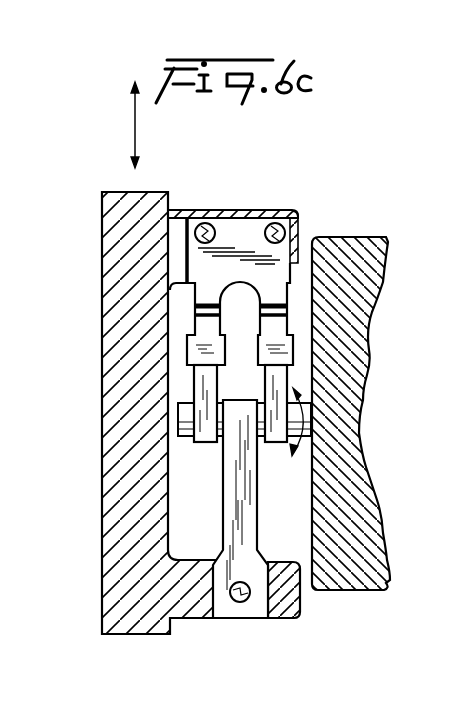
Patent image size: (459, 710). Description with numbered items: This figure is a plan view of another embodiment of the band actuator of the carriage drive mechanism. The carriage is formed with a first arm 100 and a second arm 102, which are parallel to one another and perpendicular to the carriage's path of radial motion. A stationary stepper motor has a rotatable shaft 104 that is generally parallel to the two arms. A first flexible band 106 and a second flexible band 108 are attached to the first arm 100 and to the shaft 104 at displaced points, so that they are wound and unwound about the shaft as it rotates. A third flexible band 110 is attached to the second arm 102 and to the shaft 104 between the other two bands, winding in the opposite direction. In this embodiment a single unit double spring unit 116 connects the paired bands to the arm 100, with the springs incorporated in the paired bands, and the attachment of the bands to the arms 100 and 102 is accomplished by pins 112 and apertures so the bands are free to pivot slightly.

The first arm 100 is at (299, 212).
The second arm 102 is at (184, 620).
The rotatable shaft 104 is at (180, 428).
The first flexible band 106 is at (204, 386).
The second flexible band 108 is at (275, 374).
The third flexible band 110 is at (240, 492).
The pins 112 is at (203, 225).
The single unit double spring unit 116 is at (231, 230).